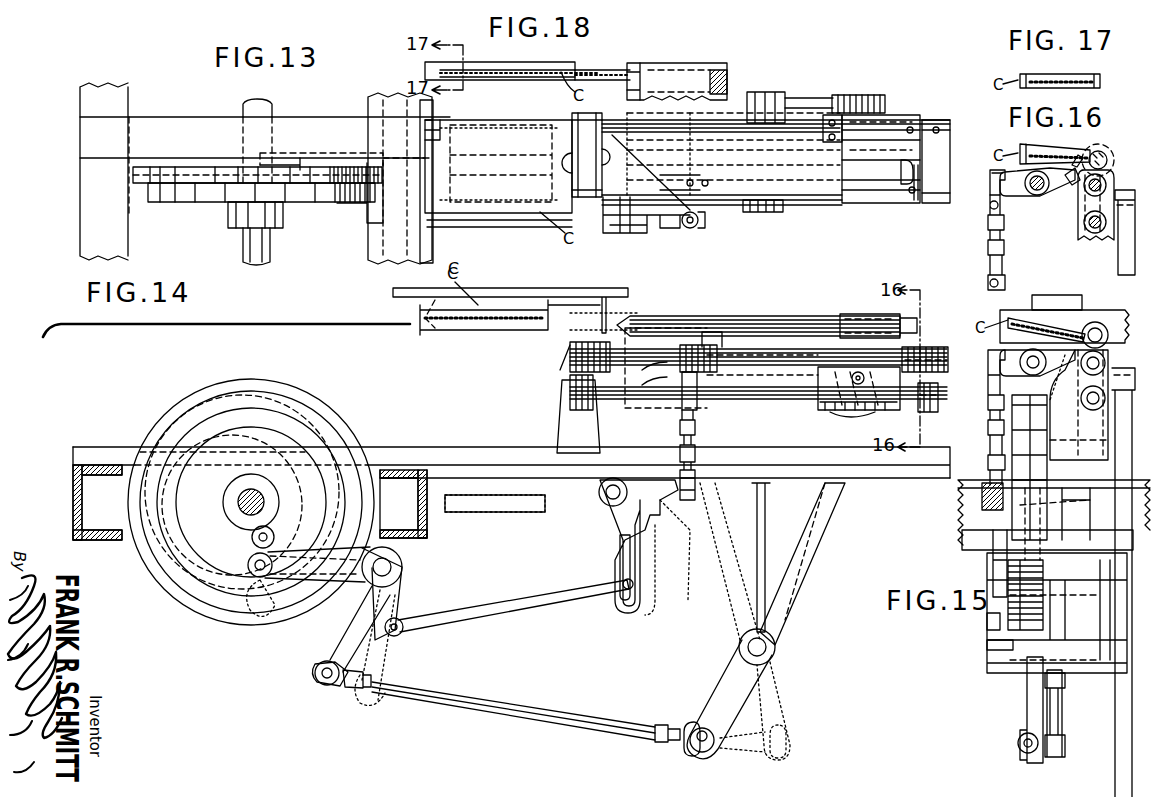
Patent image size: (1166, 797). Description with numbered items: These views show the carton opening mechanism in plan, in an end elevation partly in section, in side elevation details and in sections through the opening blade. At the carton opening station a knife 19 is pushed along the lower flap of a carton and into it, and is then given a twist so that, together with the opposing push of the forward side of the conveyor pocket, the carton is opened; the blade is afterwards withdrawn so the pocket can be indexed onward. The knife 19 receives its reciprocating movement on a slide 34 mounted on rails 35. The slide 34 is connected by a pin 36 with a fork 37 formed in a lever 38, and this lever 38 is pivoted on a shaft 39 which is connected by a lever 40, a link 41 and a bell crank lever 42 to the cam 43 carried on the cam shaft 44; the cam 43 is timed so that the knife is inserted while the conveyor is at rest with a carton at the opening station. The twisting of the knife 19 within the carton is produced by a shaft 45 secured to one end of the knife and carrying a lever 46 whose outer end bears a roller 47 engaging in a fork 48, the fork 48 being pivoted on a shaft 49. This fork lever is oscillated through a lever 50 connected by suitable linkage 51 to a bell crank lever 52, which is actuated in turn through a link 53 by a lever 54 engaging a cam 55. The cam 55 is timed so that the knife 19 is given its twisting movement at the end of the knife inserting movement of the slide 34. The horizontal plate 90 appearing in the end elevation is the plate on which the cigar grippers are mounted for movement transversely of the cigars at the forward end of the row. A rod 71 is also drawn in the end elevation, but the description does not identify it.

In FIG. 18, the knife 19 is at (590, 72).
In FIG. 17, the knife 19 is at (1038, 78).
In FIG. 16, the knife 19 is at (1043, 150).
In FIG. 15, the knife 19 is at (1062, 330).
In FIG. 14, the knife 19 is at (765, 316).
In FIG. 18, the slide 34 is at (688, 63).
In FIG. 16, the slide 34 is at (1092, 230).
In FIG. 14, the slide 34 is at (820, 377).
In FIG. 18, the rails 35 is at (680, 225).
In FIG. 16, the rails 35 is at (1080, 200).
In FIG. 15, the rails 35 is at (1082, 400).
In FIG. 14, the pin 36 is at (840, 400).
In FIG. 14, the fork 37 is at (850, 405).
In FIG. 18, the lever 38 is at (800, 98).
In FIG. 16, the lever 38 is at (1120, 255).
In FIG. 15, the lever 38 is at (1118, 445).
In FIG. 14, the lever 38 is at (830, 530).
In FIG. 14, the shaft 39 is at (776, 648).
In FIG. 15, the lever 40 is at (1027, 700).
In FIG. 14, the lever 40 is at (712, 688).
In FIG. 15, the link 41 is at (1062, 714).
In FIG. 13, the bell crank lever 42 is at (290, 152).
In FIG. 15, the bell crank lever 42 is at (1055, 610).
In FIG. 14, the bell crank lever 42 is at (322, 640).
In FIG. 13, the cam 43 is at (200, 167).
In FIG. 14, the cam 43 is at (250, 535).
In FIG. 13, the cam shaft 44 is at (243, 252).
In FIG. 14, the cam shaft 44 is at (243, 508).
In FIG. 18, the shaft 45 is at (888, 125).
In FIG. 16, the shaft 45 is at (1106, 166).
In FIG. 15, the shaft 45 is at (1105, 342).
In FIG. 16, the lever 46 is at (1072, 187).
In FIG. 18, the roller 47 is at (915, 195).
In FIG. 16, the roller 47 is at (1074, 170).
In FIG. 18, the fork 48 is at (900, 170).
In FIG. 16, the fork 48 is at (1085, 192).
In FIG. 18, the shaft 49 is at (620, 185).
In FIG. 16, the shaft 49 is at (1030, 195).
In FIG. 14, the shaft 49 is at (655, 348).
In FIG. 16, the lever 50 is at (990, 183).
In FIG. 14, the lever 50 is at (680, 378).
In FIG. 16, the linkage 51 is at (995, 280).
In FIG. 14, the linkage 51 is at (683, 470).
In FIG. 15, the bell crank lever 52 is at (993, 556).
In FIG. 14, the bell crank lever 52 is at (640, 518).
In FIG. 15, the link 53 is at (987, 622).
In FIG. 14, the link 53 is at (518, 598).
In FIG. 13, the lever 54 is at (352, 205).
In FIG. 15, the lever 54 is at (1000, 646).
In FIG. 14, the lever 54 is at (402, 578).
In FIG. 13, the cam 55 is at (185, 202).
In FIG. 14, the cam 55 is at (258, 580).
In FIG. 14, the rod 71 is at (586, 712).
In FIG. 14, the plate 90 is at (348, 325).